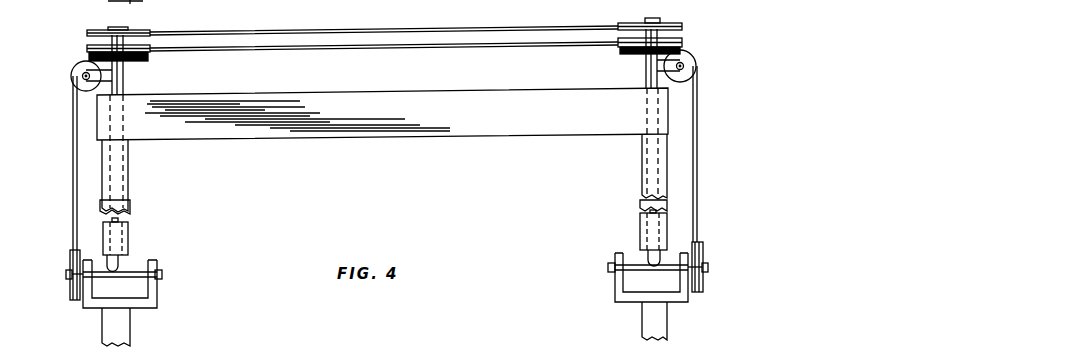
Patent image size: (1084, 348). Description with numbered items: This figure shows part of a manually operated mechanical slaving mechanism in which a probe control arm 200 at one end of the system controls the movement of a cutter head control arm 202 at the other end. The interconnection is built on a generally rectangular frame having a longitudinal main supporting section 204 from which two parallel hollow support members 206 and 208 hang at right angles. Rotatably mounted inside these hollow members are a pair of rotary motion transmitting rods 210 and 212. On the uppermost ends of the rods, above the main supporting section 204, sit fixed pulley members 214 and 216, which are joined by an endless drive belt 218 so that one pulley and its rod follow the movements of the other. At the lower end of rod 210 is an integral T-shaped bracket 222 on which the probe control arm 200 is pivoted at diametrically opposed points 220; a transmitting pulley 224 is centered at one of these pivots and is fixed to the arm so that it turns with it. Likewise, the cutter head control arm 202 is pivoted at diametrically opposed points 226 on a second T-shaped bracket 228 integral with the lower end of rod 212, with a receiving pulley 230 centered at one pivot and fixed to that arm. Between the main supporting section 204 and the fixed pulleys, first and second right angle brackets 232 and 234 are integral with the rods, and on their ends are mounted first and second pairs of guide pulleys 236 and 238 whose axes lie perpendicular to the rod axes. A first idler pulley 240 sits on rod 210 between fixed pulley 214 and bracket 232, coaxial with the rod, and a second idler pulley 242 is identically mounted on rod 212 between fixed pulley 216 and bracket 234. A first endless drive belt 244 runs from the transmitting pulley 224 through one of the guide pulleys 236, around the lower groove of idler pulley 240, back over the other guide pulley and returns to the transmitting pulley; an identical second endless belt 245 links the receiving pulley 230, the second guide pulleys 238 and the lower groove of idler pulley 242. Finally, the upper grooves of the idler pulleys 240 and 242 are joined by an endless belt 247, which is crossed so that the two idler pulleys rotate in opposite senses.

The probe control arm 200 is at (130, 327).
The cutter head control arm 202 is at (642, 325).
The main supporting section 204 is at (388, 124).
The hollow support member 206 is at (128, 193).
The hollow support member 208 is at (642, 187).
The rotary motion transmitting rod 210 is at (124, 80).
The rotary motion transmitting rod 212 is at (645, 68).
The fixed pulley member 214 is at (92, 30).
The fixed pulley member 216 is at (672, 22).
The endless drive belt 218 is at (328, 30).
The pivot points 220 is at (66, 274).
The T-shaped bracket 222 is at (138, 272).
The transmitting pulley 224 is at (70, 258).
The pivot points 226 is at (608, 268).
The T-shaped bracket 228 is at (638, 265).
The receiving pulley 230 is at (701, 252).
The right angle bracket 232 is at (72, 68).
The right angle bracket 234 is at (689, 60).
The guide pulleys 236 is at (71, 85).
The guide pulleys 238 is at (697, 72).
The idler pulley 240 is at (88, 48).
The idler pulley 242 is at (682, 42).
The endless drive belt 244 is at (72, 158).
The endless belt 245 is at (698, 148).
The endless belt 247 is at (333, 48).